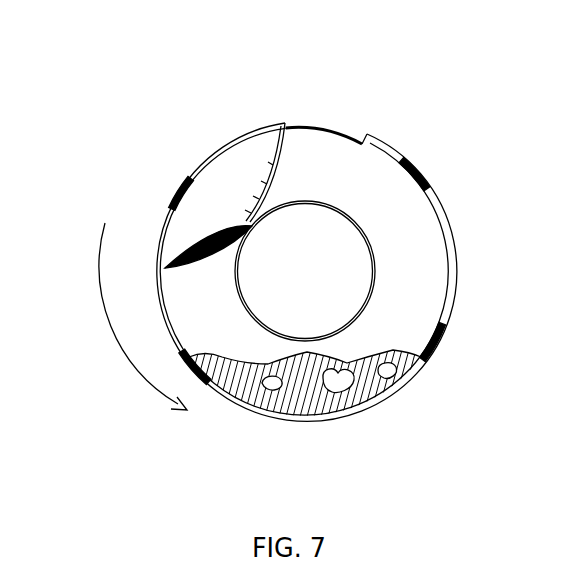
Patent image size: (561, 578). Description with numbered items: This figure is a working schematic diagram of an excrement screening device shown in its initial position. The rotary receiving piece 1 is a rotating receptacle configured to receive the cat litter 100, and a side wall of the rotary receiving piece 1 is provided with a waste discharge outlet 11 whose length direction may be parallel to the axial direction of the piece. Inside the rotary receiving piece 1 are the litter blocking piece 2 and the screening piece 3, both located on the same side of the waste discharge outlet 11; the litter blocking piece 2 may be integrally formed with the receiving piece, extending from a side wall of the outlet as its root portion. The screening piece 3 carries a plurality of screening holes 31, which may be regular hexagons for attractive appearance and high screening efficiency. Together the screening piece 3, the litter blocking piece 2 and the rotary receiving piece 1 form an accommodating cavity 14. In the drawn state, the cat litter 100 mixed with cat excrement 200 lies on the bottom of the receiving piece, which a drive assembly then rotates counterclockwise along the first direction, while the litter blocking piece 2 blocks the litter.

The rotary receiving piece 1 is at (438, 198).
The waste discharge outlet 11 is at (333, 125).
The accommodating cavity 14 is at (226, 161).
The litter blocking piece 2 is at (273, 160).
The screening piece 3 is at (205, 238).
The screening hole 31 is at (190, 256).
The cat litter 100 is at (291, 416).
The excrement 200 is at (342, 378).